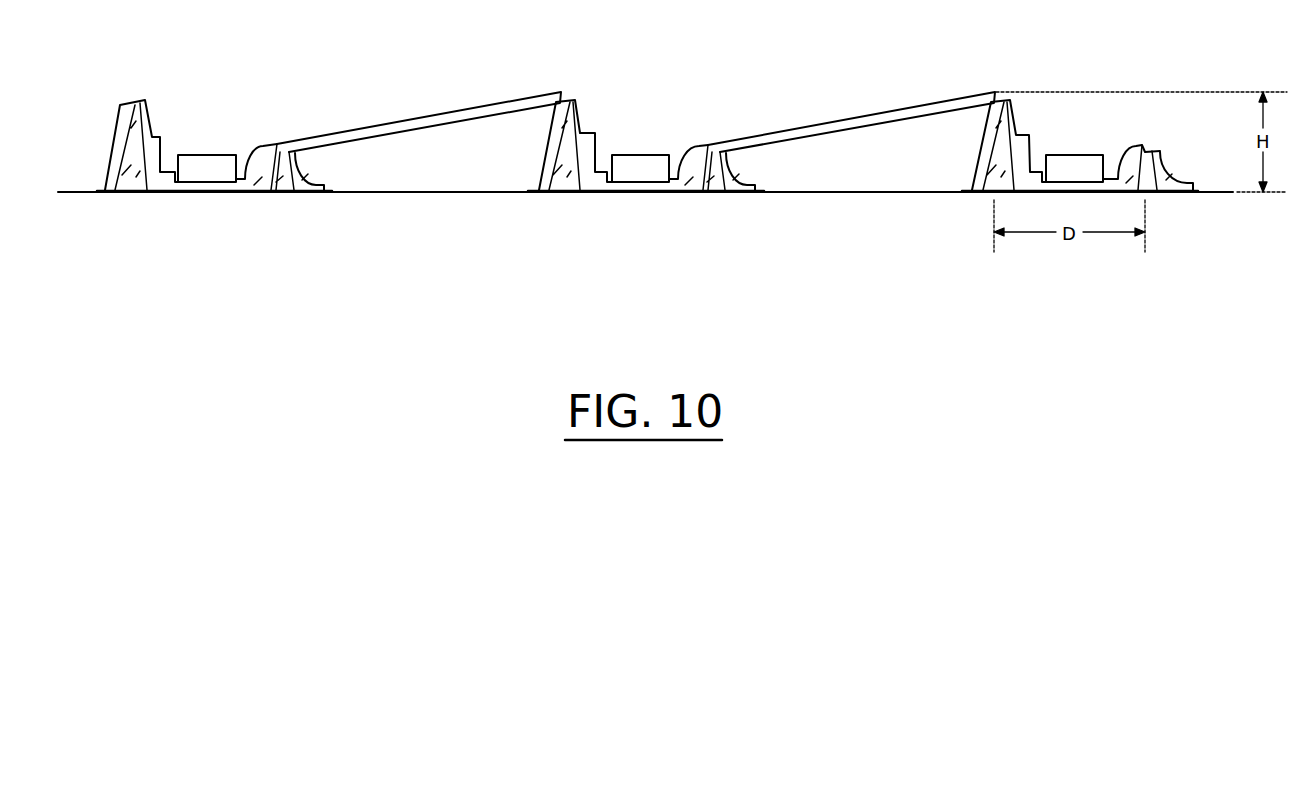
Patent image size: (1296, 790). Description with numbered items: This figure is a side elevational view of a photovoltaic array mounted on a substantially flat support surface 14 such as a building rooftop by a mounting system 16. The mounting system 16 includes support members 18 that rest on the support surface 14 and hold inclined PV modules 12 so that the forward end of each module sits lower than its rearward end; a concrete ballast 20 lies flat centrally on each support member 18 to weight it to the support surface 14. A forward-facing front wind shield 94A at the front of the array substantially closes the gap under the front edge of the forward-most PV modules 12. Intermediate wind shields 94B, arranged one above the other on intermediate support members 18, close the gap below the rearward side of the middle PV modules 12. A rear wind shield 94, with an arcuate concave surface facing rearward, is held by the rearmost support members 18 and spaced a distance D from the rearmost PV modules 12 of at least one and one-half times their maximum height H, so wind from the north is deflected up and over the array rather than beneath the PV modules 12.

The PV module 12 is at (857, 115).
The support surface 14 is at (385, 192).
The mounting system 16 is at (738, 193).
The support member 18 is at (697, 192).
The ballast 20 is at (633, 172).
The rear wind shield 94 is at (1174, 160).
The front wind shield 94A is at (257, 163).
The intermediate wind shield 94B is at (580, 120).